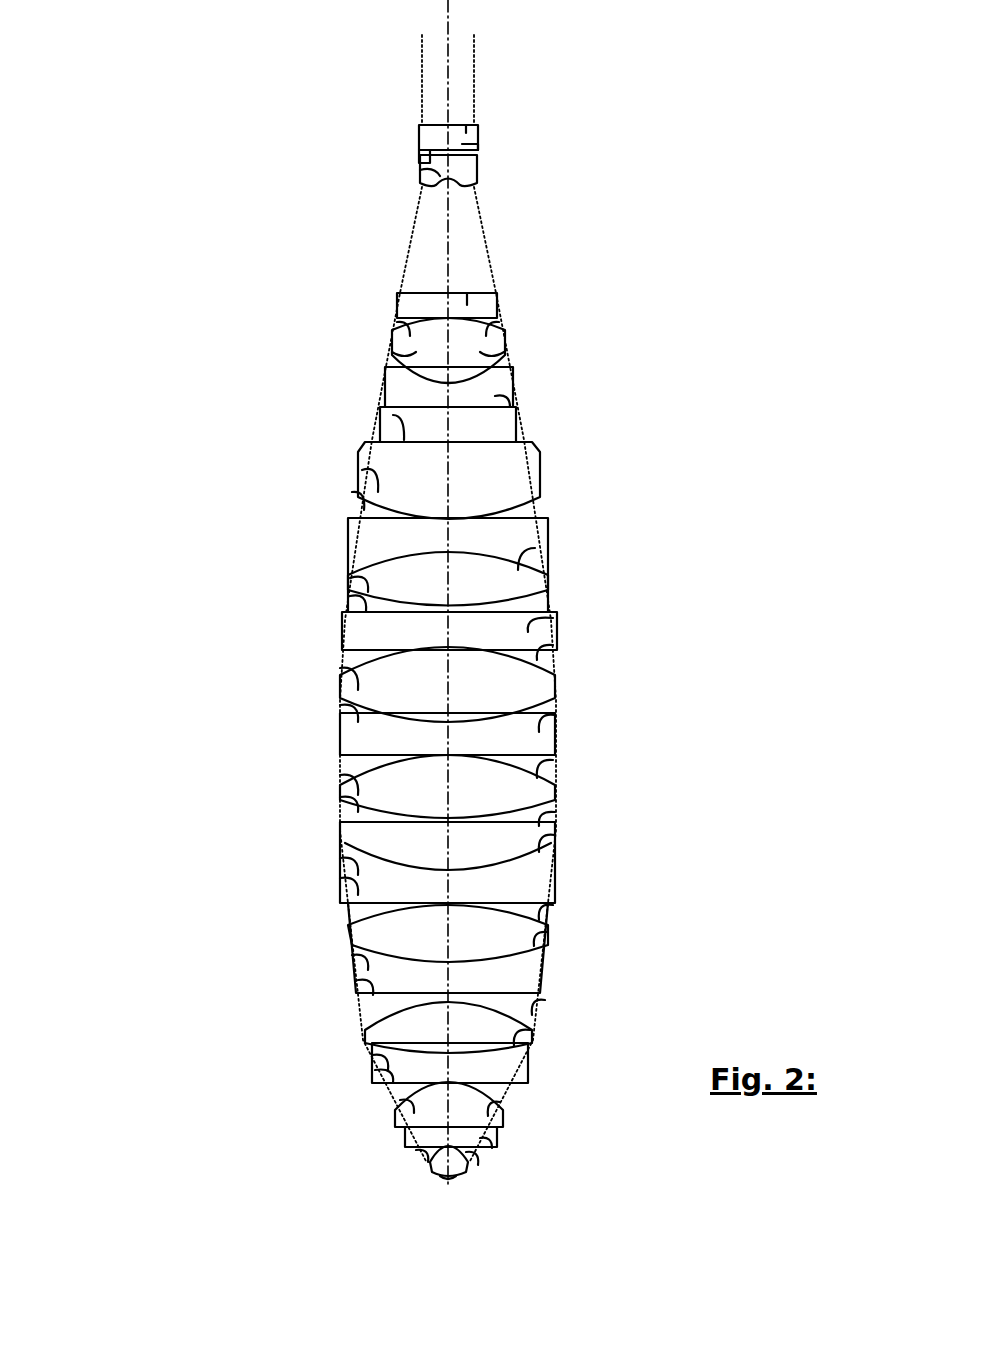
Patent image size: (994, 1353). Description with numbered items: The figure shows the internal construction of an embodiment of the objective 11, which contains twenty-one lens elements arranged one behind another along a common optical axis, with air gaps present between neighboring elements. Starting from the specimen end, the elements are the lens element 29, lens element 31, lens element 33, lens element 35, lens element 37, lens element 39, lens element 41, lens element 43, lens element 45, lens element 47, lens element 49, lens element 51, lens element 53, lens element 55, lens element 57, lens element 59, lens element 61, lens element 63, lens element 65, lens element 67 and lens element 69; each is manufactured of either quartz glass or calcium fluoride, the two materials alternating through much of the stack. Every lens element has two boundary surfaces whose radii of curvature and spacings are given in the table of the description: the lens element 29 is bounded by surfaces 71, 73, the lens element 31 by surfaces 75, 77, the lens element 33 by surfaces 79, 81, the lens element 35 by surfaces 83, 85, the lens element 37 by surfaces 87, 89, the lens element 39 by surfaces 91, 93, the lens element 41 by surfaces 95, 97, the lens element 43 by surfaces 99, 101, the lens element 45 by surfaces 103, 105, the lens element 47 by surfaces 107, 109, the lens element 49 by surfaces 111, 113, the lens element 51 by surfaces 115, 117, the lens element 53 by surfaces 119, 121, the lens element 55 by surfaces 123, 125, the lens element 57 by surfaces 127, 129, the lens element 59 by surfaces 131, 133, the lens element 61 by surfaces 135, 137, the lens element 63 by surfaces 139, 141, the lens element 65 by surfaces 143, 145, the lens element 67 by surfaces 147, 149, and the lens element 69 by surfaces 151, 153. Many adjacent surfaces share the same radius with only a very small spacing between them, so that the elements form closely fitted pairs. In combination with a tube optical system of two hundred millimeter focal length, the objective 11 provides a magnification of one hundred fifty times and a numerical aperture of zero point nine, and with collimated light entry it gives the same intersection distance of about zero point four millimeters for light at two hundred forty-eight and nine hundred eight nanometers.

The objective 11 is at (182, 310).
The lens element 29 is at (476, 1170).
The lens element 31 is at (405, 1129).
The lens element 33 is at (357, 1105).
The lens element 35 is at (505, 1071).
The lens element 37 is at (390, 1032).
The lens element 39 is at (528, 968).
The lens element 41 is at (353, 930).
The lens element 43 is at (517, 884).
The lens element 45 is at (340, 833).
The lens element 47 is at (515, 785).
The lens element 49 is at (363, 745).
The lens element 51 is at (515, 683).
The lens element 53 is at (350, 630).
The lens element 55 is at (515, 585).
The lens element 57 is at (348, 533).
The lens element 59 is at (502, 470).
The lens element 61 is at (398, 390).
The lens element 63 is at (480, 345).
The lens element 65 is at (413, 308).
The lens element 67 is at (478, 170).
The lens element 69 is at (421, 133).
The boundary surface 71 is at (445, 1174).
The boundary surface 73 is at (420, 1153).
The boundary surface 75 is at (470, 1158).
The boundary surface 77 is at (490, 1143).
The boundary surface 79 is at (503, 1108).
The boundary surface 81 is at (413, 1108).
The boundary surface 83 is at (369, 1071).
The boundary surface 85 is at (373, 1062).
The boundary surface 87 is at (533, 1033).
The boundary surface 89 is at (543, 1007).
The boundary surface 91 is at (357, 983).
The boundary surface 93 is at (357, 954).
The boundary surface 95 is at (545, 936).
The boundary surface 97 is at (553, 915).
The boundary surface 99 is at (343, 880).
The boundary surface 101 is at (340, 870).
The boundary surface 103 is at (557, 838).
The boundary surface 105 is at (555, 816).
The boundary surface 107 is at (340, 800).
The boundary surface 109 is at (337, 792).
The boundary surface 111 is at (533, 772).
The boundary surface 113 is at (533, 720).
The boundary surface 115 is at (338, 710).
The boundary surface 117 is at (337, 683).
The boundary surface 119 is at (553, 647).
The boundary surface 121 is at (522, 627).
The boundary surface 123 is at (353, 588).
The boundary surface 125 is at (353, 582).
The boundary surface 127 is at (535, 548).
The boundary surface 129 is at (354, 498).
The boundary surface 131 is at (368, 466).
The boundary surface 133 is at (398, 425).
The boundary surface 135 is at (509, 400).
The boundary surface 137 is at (497, 382).
The boundary surface 139 is at (405, 351).
The boundary surface 141 is at (405, 330).
The boundary surface 143 is at (497, 310).
The boundary surface 145 is at (468, 293).
The boundary surface 147 is at (428, 171).
The boundary surface 149 is at (419, 160).
The boundary surface 151 is at (465, 147).
The boundary surface 153 is at (477, 125).